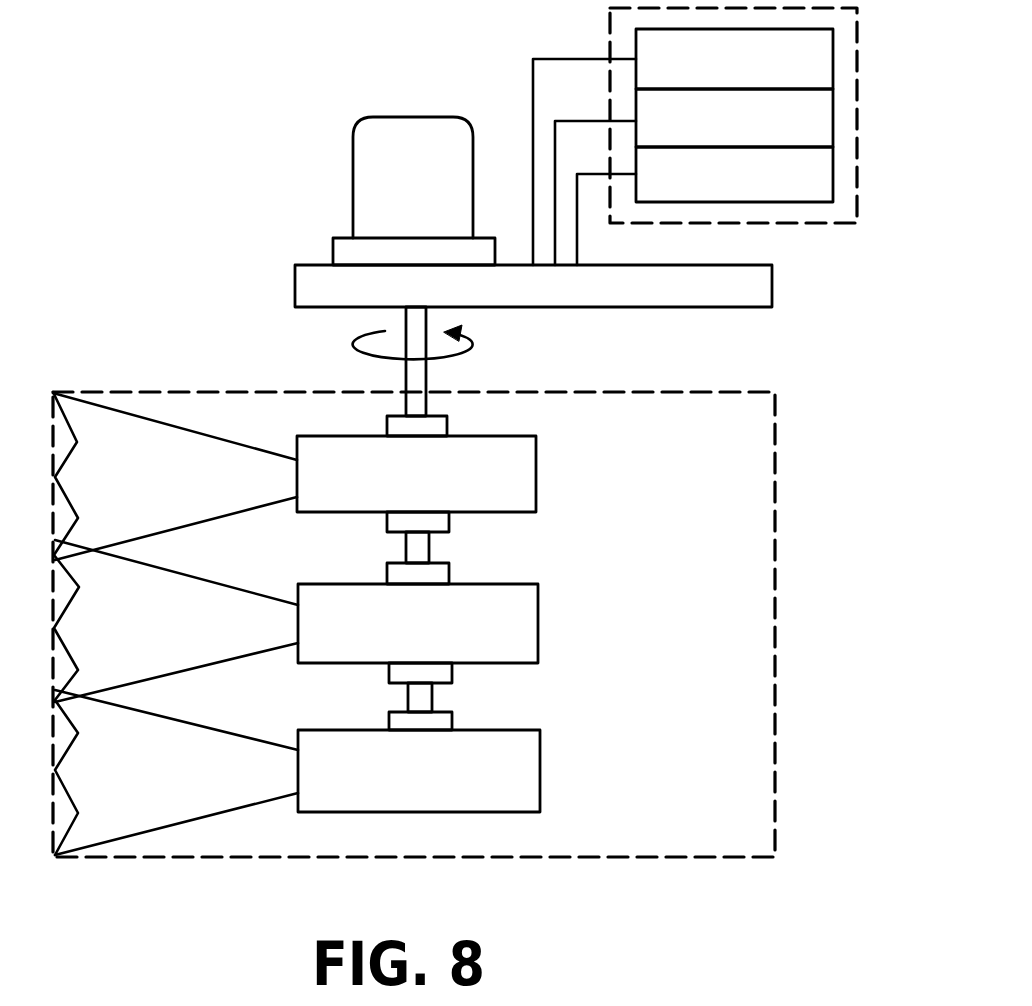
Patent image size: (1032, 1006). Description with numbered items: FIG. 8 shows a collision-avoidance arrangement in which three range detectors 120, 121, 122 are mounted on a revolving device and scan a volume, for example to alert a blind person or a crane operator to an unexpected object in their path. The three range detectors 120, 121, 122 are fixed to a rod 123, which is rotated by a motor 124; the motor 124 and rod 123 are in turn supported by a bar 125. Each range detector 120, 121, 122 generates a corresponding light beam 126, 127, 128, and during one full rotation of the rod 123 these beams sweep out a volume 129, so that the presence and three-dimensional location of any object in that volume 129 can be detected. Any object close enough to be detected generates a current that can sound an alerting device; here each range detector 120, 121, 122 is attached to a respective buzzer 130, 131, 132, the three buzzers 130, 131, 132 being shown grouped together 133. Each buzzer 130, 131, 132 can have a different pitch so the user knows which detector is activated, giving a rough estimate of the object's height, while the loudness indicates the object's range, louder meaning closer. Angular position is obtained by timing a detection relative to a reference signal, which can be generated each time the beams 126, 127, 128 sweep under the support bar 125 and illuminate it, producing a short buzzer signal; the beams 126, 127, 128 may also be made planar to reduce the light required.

The range detector 120 is at (536, 478).
The range detector 121 is at (538, 613).
The range detector 122 is at (540, 760).
The rod 123 is at (405, 378).
The motor 124 is at (432, 185).
The bar 125 is at (772, 288).
The light beam 126 is at (192, 495).
The light beam 127 is at (178, 651).
The light beam 128 is at (192, 793).
The volume 129 is at (728, 815).
The buzzer 130 is at (833, 59).
The buzzer 131 is at (833, 127).
The buzzer 132 is at (833, 178).
The buzzer array 133 is at (845, 225).